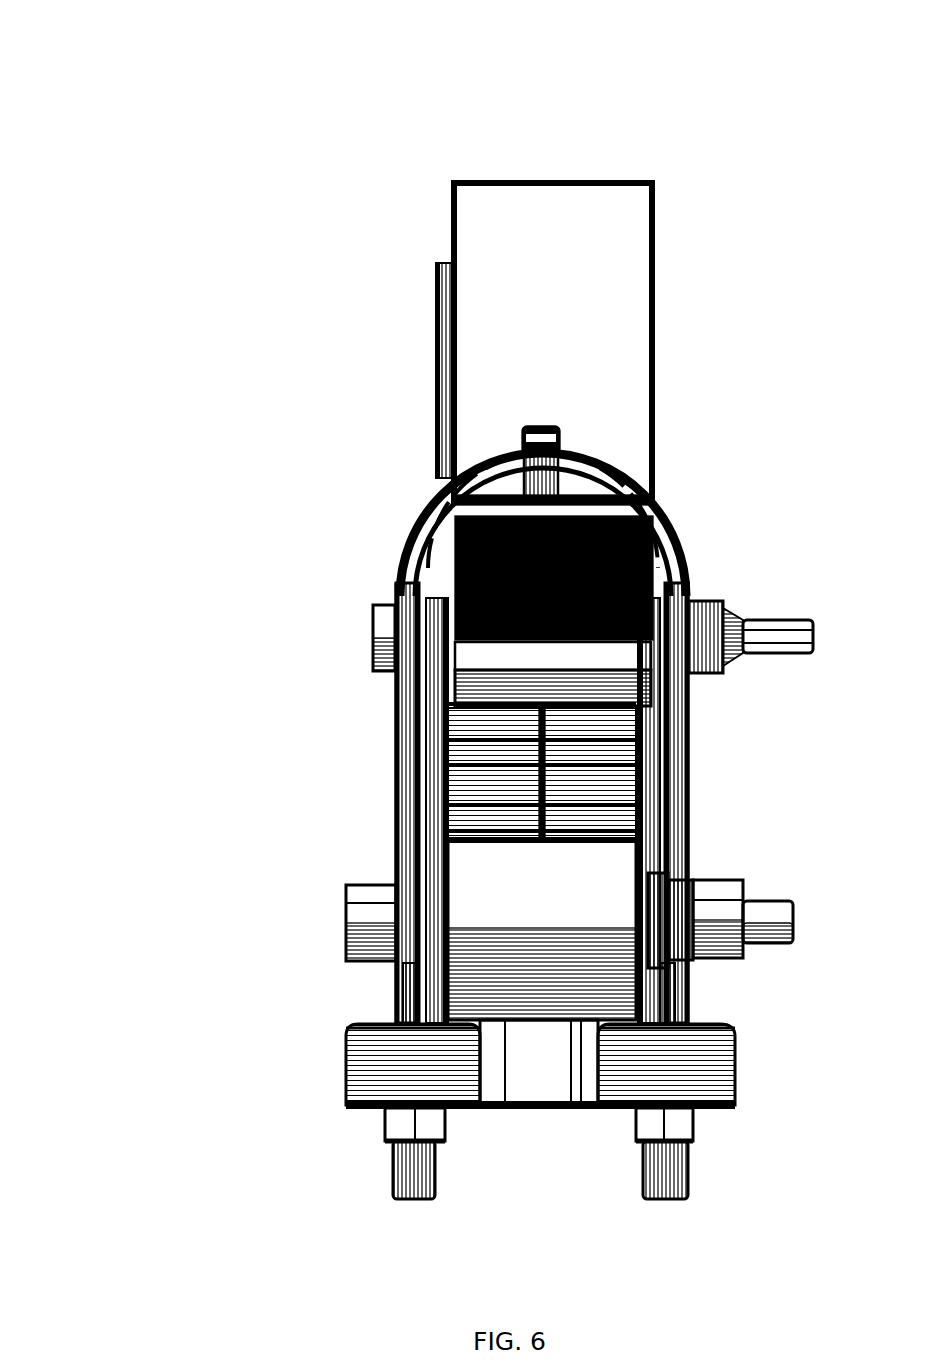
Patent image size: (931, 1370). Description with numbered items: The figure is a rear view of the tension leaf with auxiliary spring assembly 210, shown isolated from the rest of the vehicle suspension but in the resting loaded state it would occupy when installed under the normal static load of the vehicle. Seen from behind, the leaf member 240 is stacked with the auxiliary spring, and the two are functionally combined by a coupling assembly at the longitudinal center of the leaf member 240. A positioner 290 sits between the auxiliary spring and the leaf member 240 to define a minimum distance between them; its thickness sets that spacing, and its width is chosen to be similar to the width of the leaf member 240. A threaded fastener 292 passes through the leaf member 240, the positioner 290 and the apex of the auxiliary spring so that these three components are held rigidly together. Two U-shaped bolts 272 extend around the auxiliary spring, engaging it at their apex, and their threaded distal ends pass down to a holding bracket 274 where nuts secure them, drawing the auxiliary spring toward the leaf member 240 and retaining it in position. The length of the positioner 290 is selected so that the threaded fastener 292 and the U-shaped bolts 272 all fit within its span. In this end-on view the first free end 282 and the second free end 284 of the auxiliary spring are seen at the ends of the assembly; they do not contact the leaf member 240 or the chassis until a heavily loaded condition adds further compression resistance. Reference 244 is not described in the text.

The tension leaf with auxiliary spring assembly 210 is at (168, 85).
The first free end 282 is at (612, 172).
The threaded fasteners 292 is at (506, 440).
The second free end 284 is at (654, 495).
The positioner 290 is at (560, 650).
The U-shaped bolts 272 is at (395, 710).
The leaf member 240 is at (480, 765).
The cylinder 244 is at (465, 905).
The holding bracket 274 is at (503, 1062).